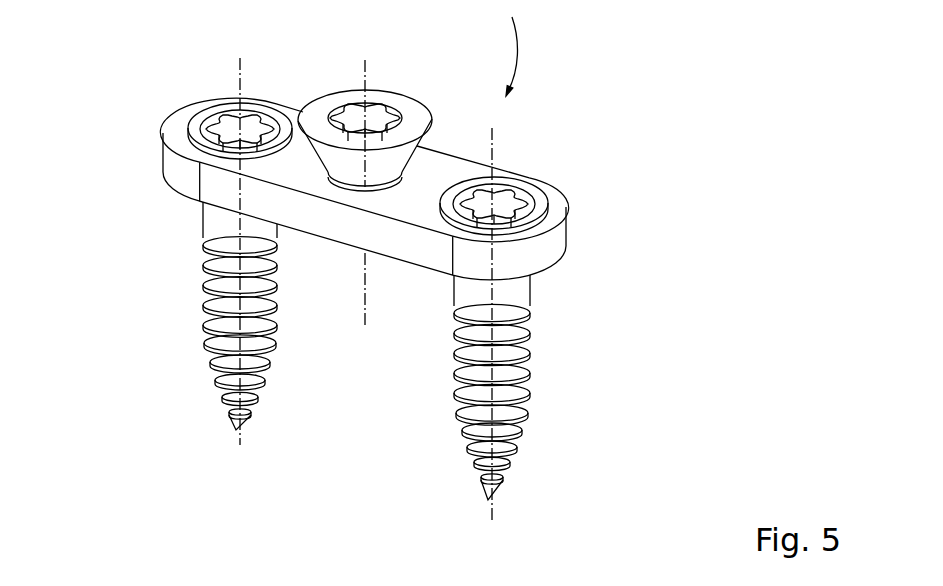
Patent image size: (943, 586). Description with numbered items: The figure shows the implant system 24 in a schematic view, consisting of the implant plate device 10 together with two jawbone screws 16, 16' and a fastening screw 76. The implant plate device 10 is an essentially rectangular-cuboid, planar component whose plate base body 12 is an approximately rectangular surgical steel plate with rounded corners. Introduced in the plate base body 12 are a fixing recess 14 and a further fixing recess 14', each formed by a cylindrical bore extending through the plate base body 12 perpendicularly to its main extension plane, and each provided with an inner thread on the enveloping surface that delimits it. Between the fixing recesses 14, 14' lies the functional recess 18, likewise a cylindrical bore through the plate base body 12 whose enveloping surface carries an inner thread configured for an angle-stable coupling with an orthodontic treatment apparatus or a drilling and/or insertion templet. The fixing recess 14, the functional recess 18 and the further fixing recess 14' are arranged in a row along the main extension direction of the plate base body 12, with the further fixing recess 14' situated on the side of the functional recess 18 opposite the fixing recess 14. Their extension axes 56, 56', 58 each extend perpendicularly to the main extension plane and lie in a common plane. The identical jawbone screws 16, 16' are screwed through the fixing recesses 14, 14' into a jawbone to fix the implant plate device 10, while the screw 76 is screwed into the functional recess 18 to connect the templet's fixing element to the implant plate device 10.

The implant plate device 10 is at (377, 260).
The plate base body 12 is at (530, 254).
The fixing recess 14 is at (179, 125).
The further fixing recess 14' is at (522, 168).
The jawbone screw 16 is at (179, 272).
The jawbone screw 16' is at (546, 345).
The functional recess 18 is at (328, 180).
The implant system 24 is at (511, 48).
The extension axis 56 is at (174, 237).
The extension axis 56' is at (457, 279).
The extension axis 58 is at (363, 57).
The screw 76 is at (385, 101).